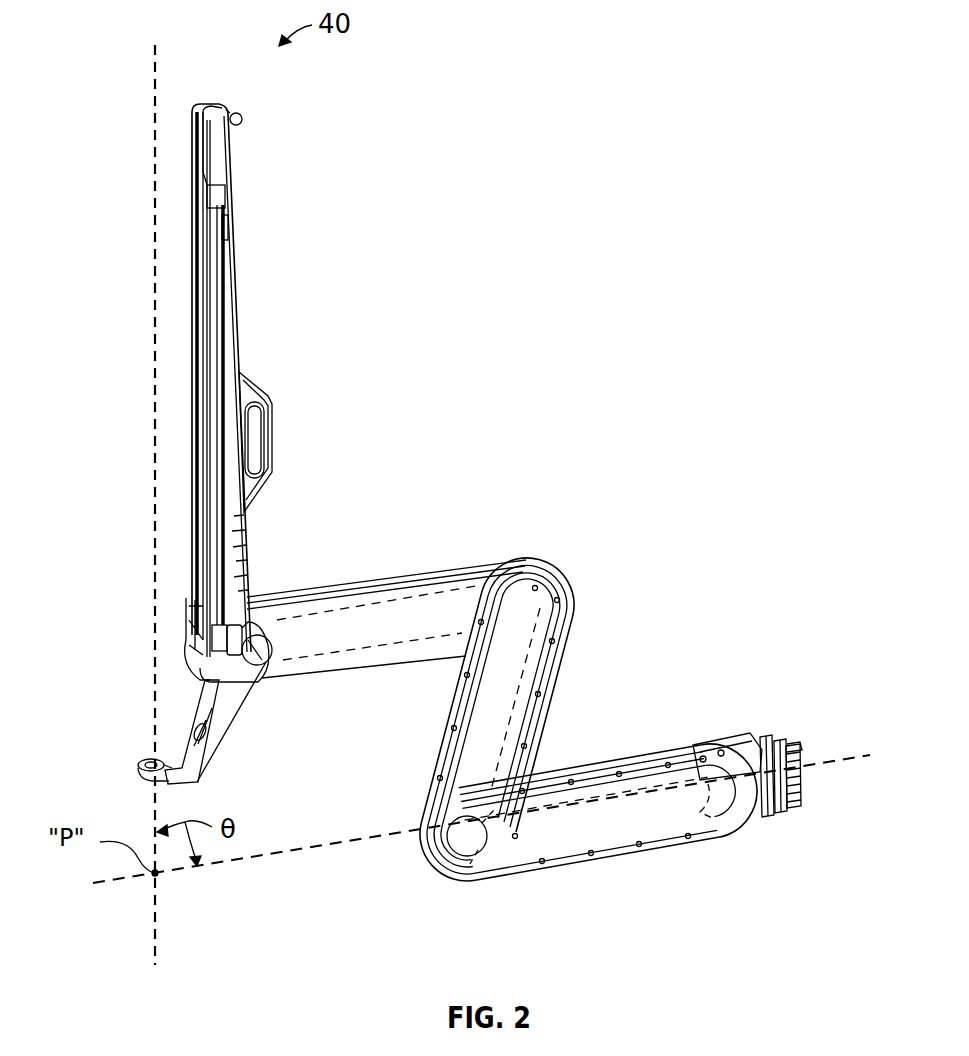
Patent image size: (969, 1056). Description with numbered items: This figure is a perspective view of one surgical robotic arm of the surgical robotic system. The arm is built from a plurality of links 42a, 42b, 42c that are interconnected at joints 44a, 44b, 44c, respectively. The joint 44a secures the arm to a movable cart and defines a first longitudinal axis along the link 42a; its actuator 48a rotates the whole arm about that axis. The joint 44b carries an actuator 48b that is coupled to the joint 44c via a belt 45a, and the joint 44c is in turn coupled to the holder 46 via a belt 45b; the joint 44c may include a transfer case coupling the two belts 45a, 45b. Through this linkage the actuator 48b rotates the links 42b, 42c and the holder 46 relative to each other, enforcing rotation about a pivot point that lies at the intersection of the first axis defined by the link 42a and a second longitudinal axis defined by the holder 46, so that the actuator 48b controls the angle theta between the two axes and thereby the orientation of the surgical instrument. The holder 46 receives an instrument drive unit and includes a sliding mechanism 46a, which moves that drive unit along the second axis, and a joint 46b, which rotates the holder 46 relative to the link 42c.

The holder 46 is at (227, 163).
The sliding mechanism 46a is at (192, 308).
The joint 46b is at (248, 640).
The link 42c is at (345, 592).
The belt 45b is at (456, 590).
The joint 44c is at (556, 609).
The link 42b is at (494, 732).
The belt 45a is at (543, 660).
The joint 44b is at (466, 875).
The actuator 48b is at (437, 840).
The link 42a is at (612, 832).
The joint 44a is at (790, 800).
The actuator 48a is at (780, 740).